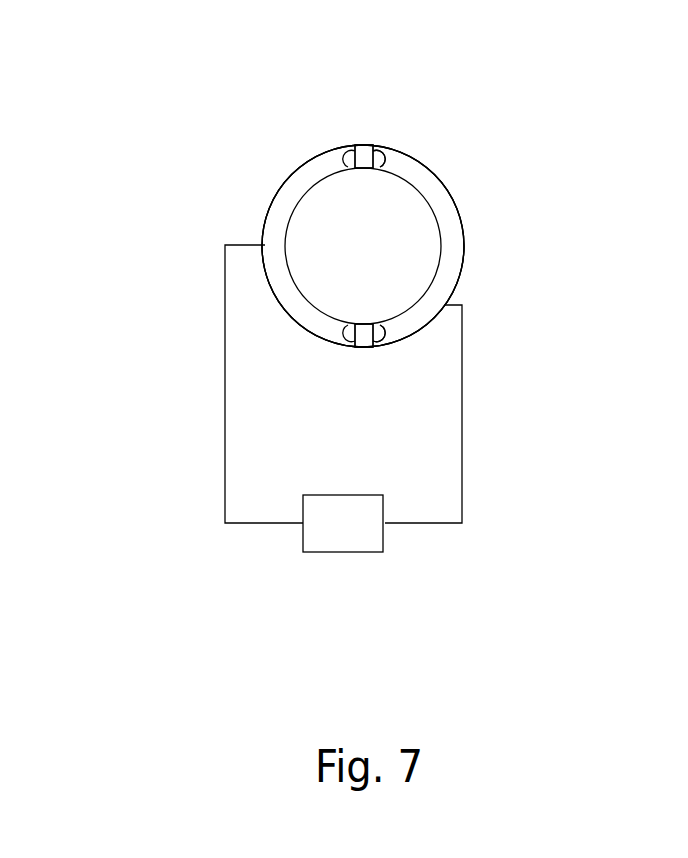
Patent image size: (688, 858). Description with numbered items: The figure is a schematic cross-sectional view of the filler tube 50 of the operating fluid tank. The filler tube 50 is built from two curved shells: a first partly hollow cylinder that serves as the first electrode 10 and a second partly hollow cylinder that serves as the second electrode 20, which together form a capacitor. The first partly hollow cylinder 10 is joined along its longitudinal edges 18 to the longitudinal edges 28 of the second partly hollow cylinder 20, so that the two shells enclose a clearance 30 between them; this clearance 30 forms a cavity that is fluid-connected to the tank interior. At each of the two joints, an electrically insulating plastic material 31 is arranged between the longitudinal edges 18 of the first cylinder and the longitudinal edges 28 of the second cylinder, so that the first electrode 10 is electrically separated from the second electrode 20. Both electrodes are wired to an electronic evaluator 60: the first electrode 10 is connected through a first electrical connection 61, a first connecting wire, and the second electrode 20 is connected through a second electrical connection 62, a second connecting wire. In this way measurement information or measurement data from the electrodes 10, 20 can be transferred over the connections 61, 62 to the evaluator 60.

The filler tube 50 is at (144, 137).
The first electrode 10 is at (303, 177).
The second electrode 20 is at (450, 232).
The clearance 30 is at (400, 200).
The longitudinal edges of the first partly hollow cylinder 18 is at (329, 150).
The electrically insulating plastic material 31 is at (370, 147).
The longitudinal edges of the second partly hollow cylinder 28 is at (395, 150).
The first electrical connection 61 is at (225, 438).
The second electrical connection 62 is at (462, 413).
The electronic evaluator 60 is at (348, 540).